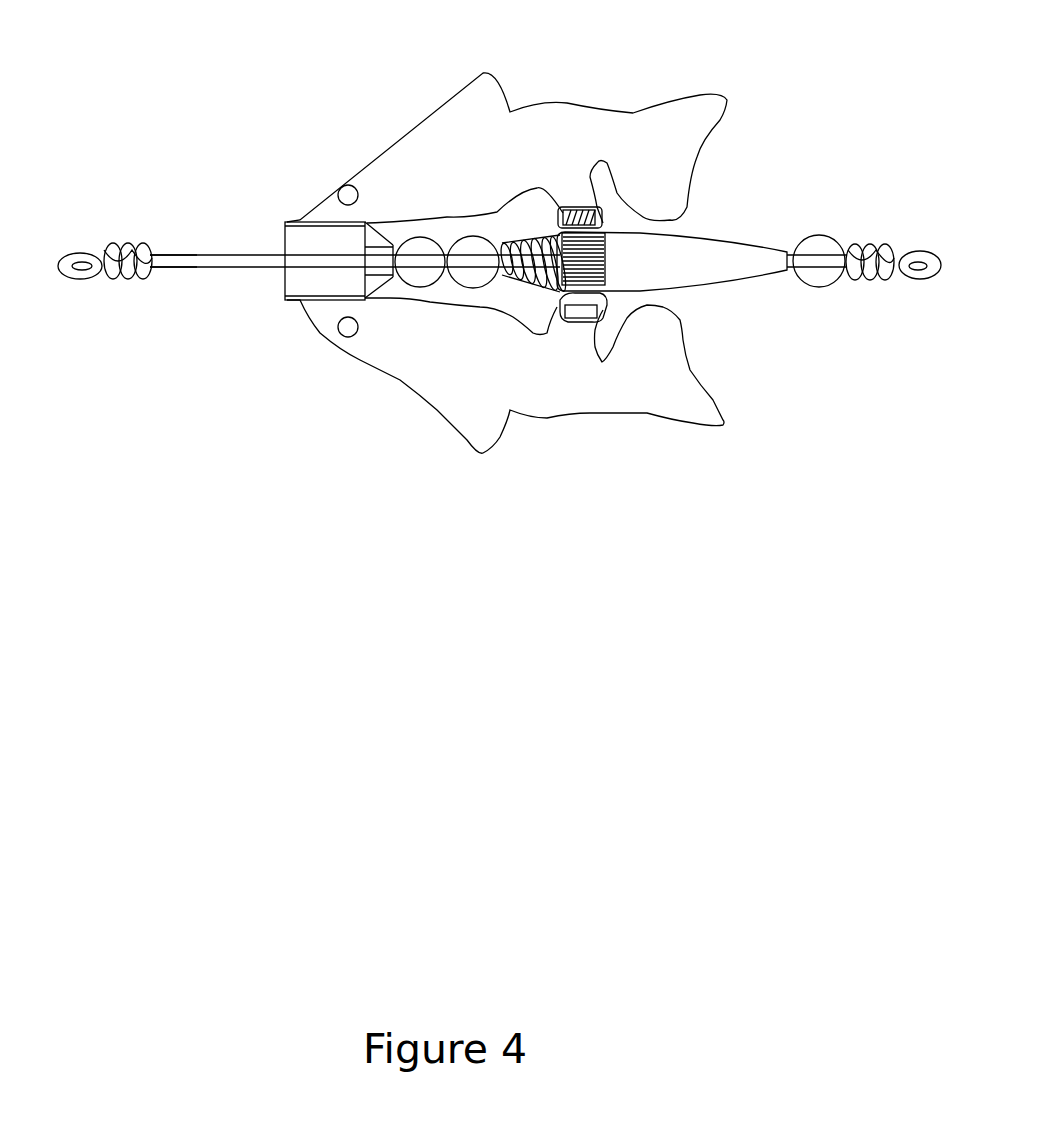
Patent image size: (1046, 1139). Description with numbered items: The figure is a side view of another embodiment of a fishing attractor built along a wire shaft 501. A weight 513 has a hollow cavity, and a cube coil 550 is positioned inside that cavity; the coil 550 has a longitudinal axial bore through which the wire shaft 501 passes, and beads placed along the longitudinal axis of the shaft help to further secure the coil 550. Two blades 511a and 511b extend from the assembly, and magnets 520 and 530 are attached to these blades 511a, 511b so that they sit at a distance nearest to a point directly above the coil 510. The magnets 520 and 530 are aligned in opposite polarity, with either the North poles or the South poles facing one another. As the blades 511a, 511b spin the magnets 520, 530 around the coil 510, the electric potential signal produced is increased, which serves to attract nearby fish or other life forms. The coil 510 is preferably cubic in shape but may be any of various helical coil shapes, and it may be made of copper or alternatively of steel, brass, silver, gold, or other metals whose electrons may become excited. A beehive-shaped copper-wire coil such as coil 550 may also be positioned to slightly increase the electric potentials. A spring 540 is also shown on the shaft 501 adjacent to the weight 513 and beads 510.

The wire shaft 501 is at (177, 243).
The blade 511a is at (387, 125).
The blade 511b is at (325, 360).
The weight 513 is at (687, 232).
The coil 510 is at (428, 290).
The spring 540 is at (507, 228).
The cube coil 550 is at (617, 277).
The magnet 520 is at (587, 205).
The magnet 530 is at (590, 323).